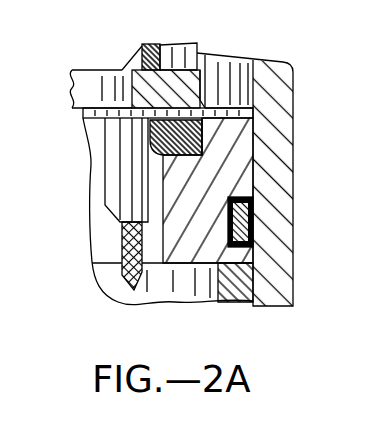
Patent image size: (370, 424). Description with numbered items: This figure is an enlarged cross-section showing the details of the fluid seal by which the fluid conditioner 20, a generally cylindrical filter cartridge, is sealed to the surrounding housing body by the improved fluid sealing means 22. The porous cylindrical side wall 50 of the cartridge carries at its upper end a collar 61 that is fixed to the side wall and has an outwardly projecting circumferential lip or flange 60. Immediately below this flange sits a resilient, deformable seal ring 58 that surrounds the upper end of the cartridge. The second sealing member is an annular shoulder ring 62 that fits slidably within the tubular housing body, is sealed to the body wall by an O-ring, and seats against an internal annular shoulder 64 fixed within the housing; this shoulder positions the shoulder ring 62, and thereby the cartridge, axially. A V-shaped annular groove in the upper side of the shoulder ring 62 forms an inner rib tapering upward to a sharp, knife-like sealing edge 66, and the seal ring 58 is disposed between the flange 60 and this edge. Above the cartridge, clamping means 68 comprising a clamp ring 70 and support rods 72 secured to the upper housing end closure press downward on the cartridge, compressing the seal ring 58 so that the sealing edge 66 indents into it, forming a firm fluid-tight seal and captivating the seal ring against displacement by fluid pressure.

The fluid conditioner 20 is at (117, 242).
The fluid sealing means 22 is at (236, 135).
The side wall 50 is at (130, 272).
The seal ring 58 is at (200, 141).
The flange 60 is at (100, 128).
The collar 61 is at (103, 125).
The shoulder ring 62 is at (253, 181).
The internal annular shoulder 64 is at (240, 283).
The sealing edge 66 is at (200, 141).
The clamping means 68 is at (196, 43).
The clamp ring 70 is at (88, 69).
The support rods 72 is at (143, 44).